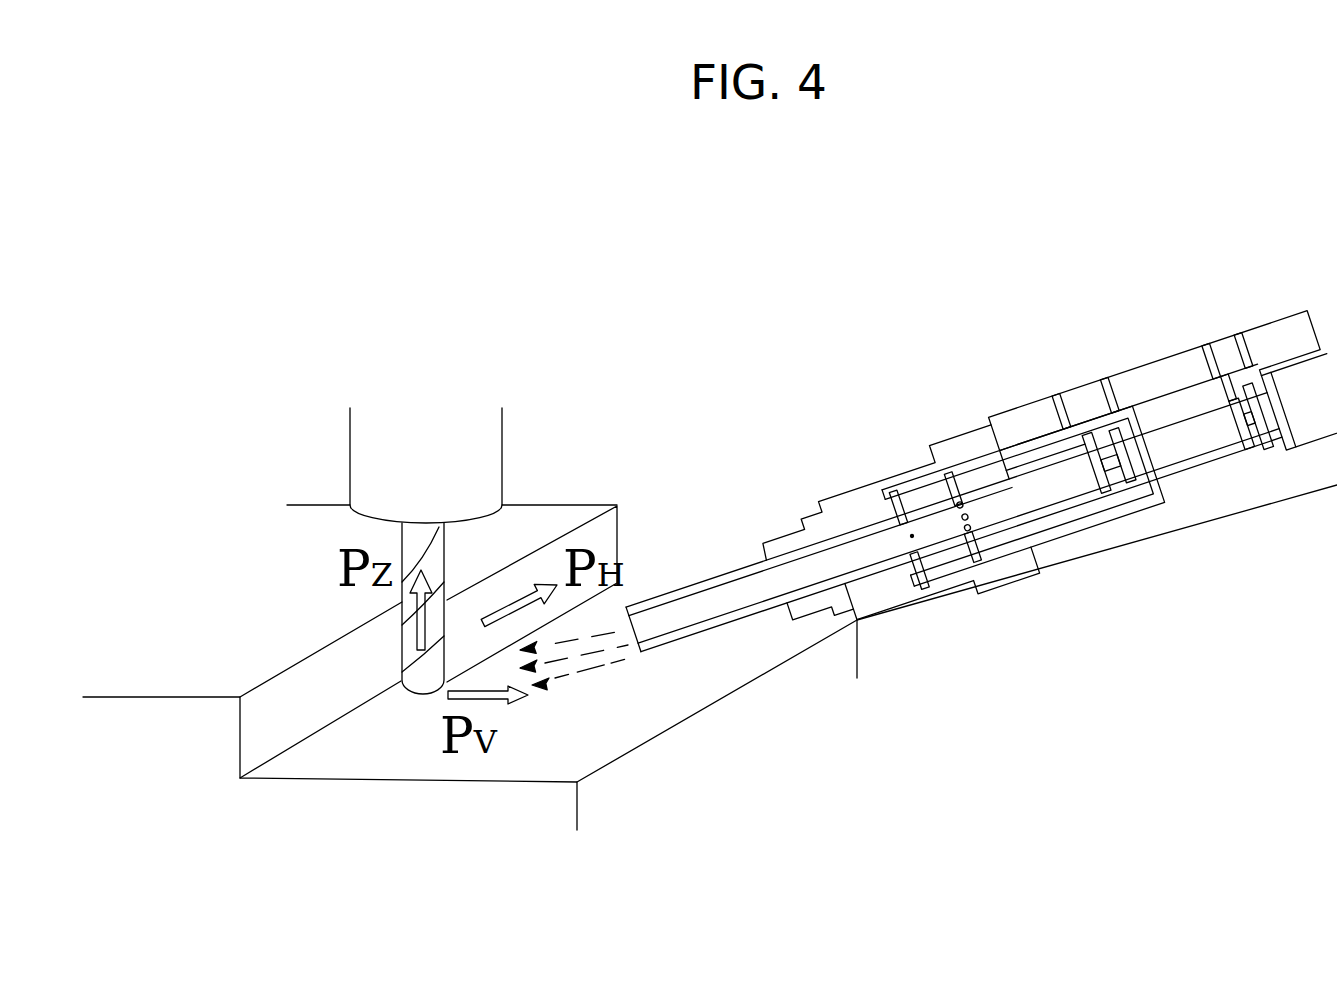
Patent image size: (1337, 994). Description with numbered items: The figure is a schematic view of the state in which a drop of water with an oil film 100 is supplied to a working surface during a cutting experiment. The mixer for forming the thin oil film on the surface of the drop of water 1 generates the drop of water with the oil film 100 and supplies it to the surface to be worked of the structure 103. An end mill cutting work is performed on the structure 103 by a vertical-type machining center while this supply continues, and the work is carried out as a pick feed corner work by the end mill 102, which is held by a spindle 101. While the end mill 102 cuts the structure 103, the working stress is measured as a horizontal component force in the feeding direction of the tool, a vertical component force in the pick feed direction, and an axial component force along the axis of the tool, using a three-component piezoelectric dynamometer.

The mixer for forming the thin oil film on the surface of the drop of water 1 is at (1118, 327).
The drop of water with the oil film 100 is at (595, 670).
The spindle 101 is at (473, 449).
The end mill 102 is at (445, 562).
The structure 103 is at (258, 732).